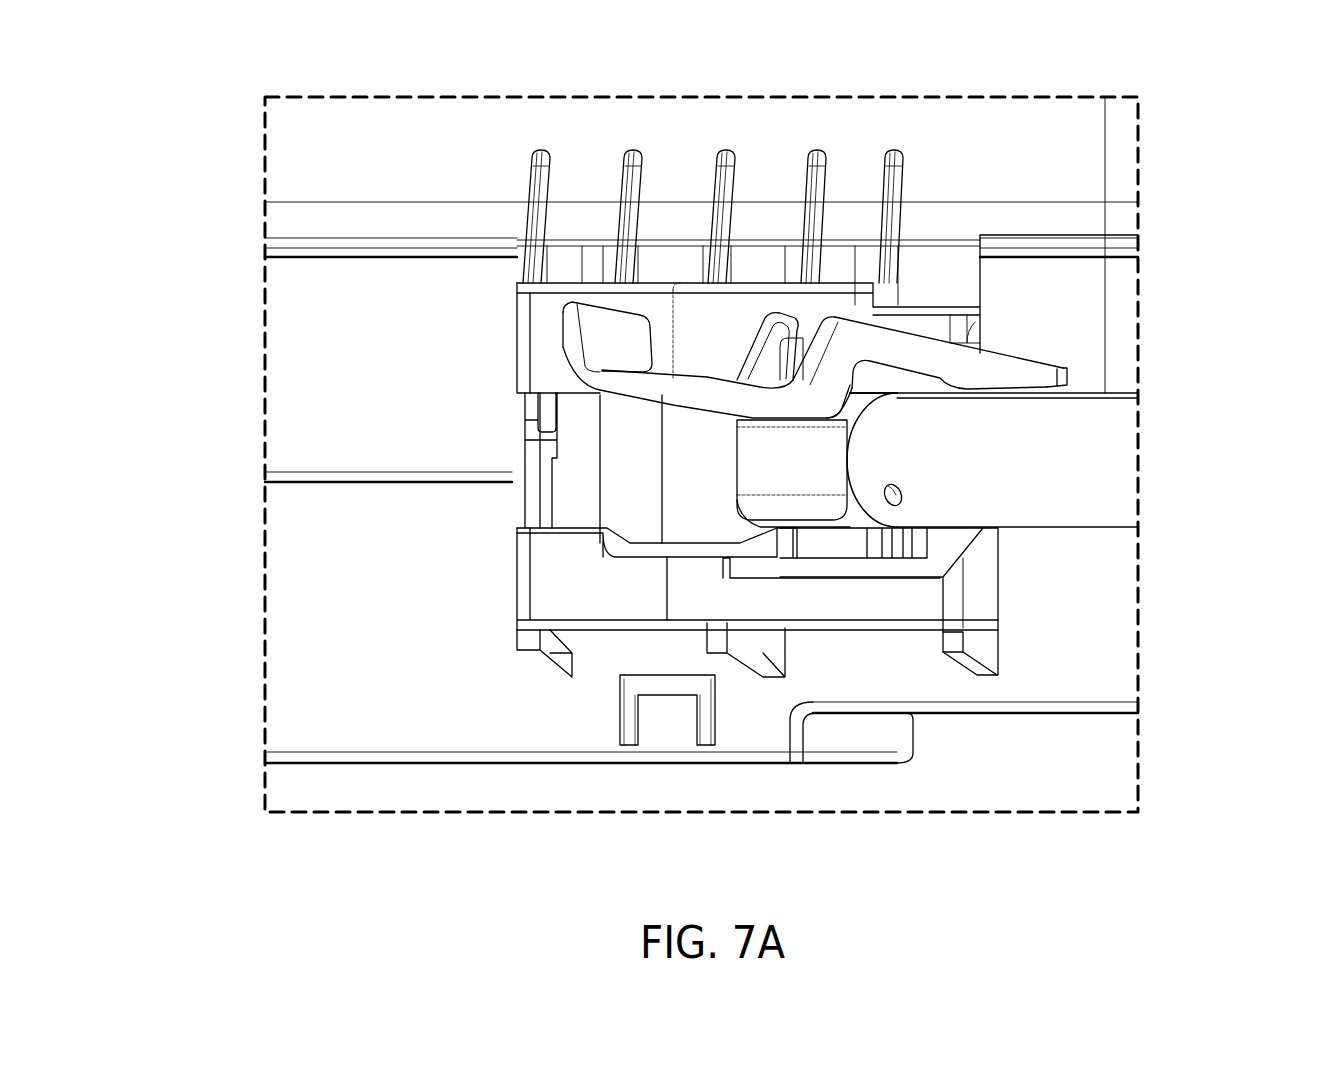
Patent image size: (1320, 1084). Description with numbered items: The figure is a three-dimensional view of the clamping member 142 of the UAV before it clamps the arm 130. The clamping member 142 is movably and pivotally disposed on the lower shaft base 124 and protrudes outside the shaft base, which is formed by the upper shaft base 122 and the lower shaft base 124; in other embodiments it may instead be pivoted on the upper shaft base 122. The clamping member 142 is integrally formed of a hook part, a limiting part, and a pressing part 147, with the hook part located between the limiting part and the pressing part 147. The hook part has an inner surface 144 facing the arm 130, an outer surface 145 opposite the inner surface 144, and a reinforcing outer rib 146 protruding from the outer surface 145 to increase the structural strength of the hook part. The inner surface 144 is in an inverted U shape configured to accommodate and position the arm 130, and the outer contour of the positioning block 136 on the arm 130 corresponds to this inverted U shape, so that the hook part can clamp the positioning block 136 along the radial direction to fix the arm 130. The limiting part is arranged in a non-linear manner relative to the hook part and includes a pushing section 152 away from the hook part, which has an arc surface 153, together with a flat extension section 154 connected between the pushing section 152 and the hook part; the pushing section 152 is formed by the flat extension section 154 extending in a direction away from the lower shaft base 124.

The upper shaft base 122 is at (517, 283).
The lower shaft base 124 is at (983, 600).
The arm 130 is at (1068, 468).
The positioning block 136 is at (830, 478).
The clamping member 142 is at (1013, 341).
The inner surface 144 is at (878, 366).
The outer surface 145 is at (803, 339).
The reinforcing outer rib 146 is at (833, 423).
The pressing part 147 is at (1070, 377).
The pushing section 152 is at (567, 326).
The arc surface 153 is at (566, 344).
The flat extension section 154 is at (713, 390).